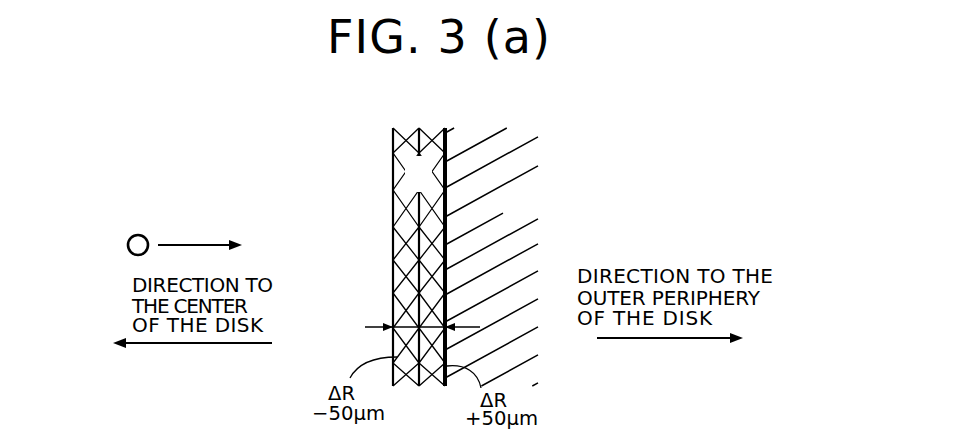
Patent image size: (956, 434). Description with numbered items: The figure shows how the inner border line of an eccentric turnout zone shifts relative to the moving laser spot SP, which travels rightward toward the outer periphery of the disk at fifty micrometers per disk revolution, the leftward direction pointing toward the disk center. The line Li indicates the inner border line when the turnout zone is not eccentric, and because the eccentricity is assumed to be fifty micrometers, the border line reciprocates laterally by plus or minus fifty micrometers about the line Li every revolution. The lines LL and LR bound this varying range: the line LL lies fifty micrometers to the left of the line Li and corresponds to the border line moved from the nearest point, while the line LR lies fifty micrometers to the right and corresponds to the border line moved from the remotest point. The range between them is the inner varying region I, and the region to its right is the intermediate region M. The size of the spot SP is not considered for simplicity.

The line LL is at (392, 141).
The line Li is at (413, 128).
The line LR is at (445, 128).
The inner varying region I is at (425, 184).
The intermediate region M is at (491, 257).
The spot SP is at (140, 234).